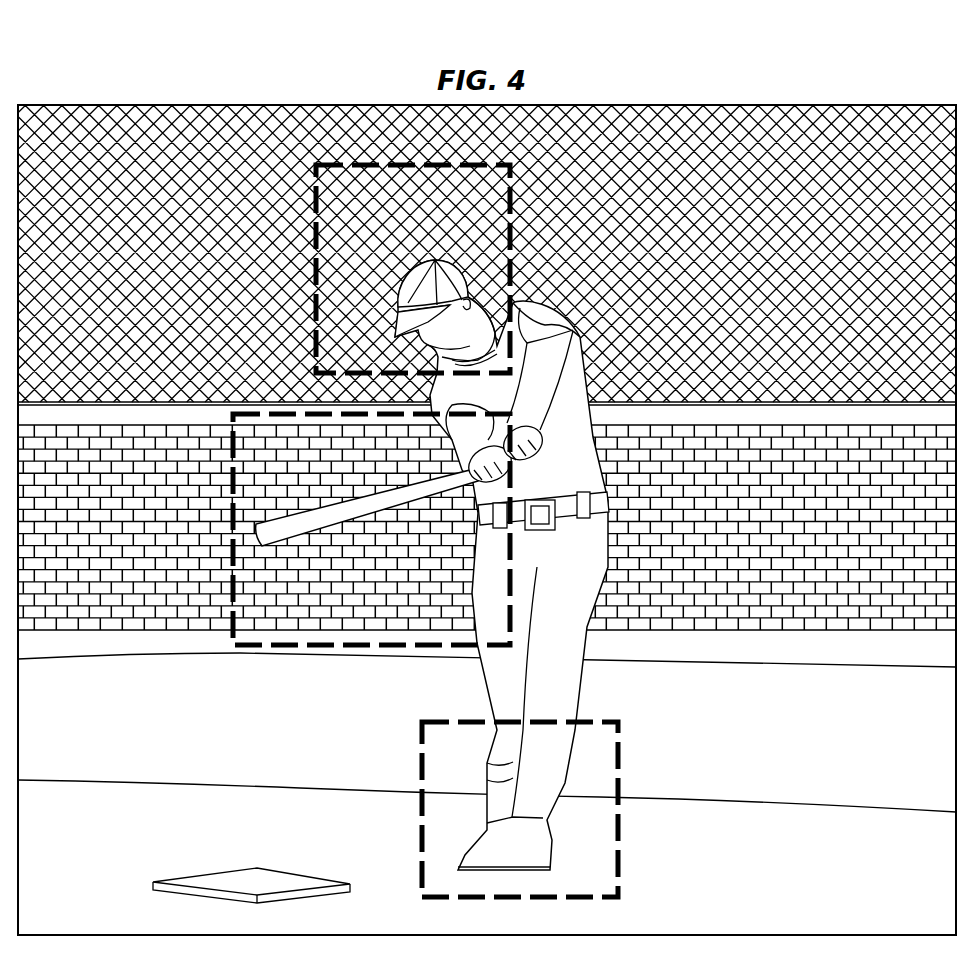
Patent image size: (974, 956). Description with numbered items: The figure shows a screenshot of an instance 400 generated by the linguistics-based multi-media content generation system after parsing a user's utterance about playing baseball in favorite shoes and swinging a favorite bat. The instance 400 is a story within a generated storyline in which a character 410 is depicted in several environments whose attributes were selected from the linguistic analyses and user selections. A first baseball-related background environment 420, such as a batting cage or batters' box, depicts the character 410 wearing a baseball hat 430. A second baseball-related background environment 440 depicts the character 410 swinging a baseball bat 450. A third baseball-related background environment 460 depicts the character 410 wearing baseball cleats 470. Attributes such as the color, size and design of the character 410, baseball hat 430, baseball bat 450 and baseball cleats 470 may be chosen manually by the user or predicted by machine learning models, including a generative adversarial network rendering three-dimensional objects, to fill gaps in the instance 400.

The instance 400 is at (742, 165).
The character 410 is at (596, 416).
The first baseball-related background environment 420 is at (314, 190).
The baseball hat 430 is at (398, 305).
The second baseball-related background environment 440 is at (231, 494).
The baseball bat 450 is at (313, 535).
The third baseball-related background environment 460 is at (622, 760).
The baseball cleats 470 is at (487, 762).